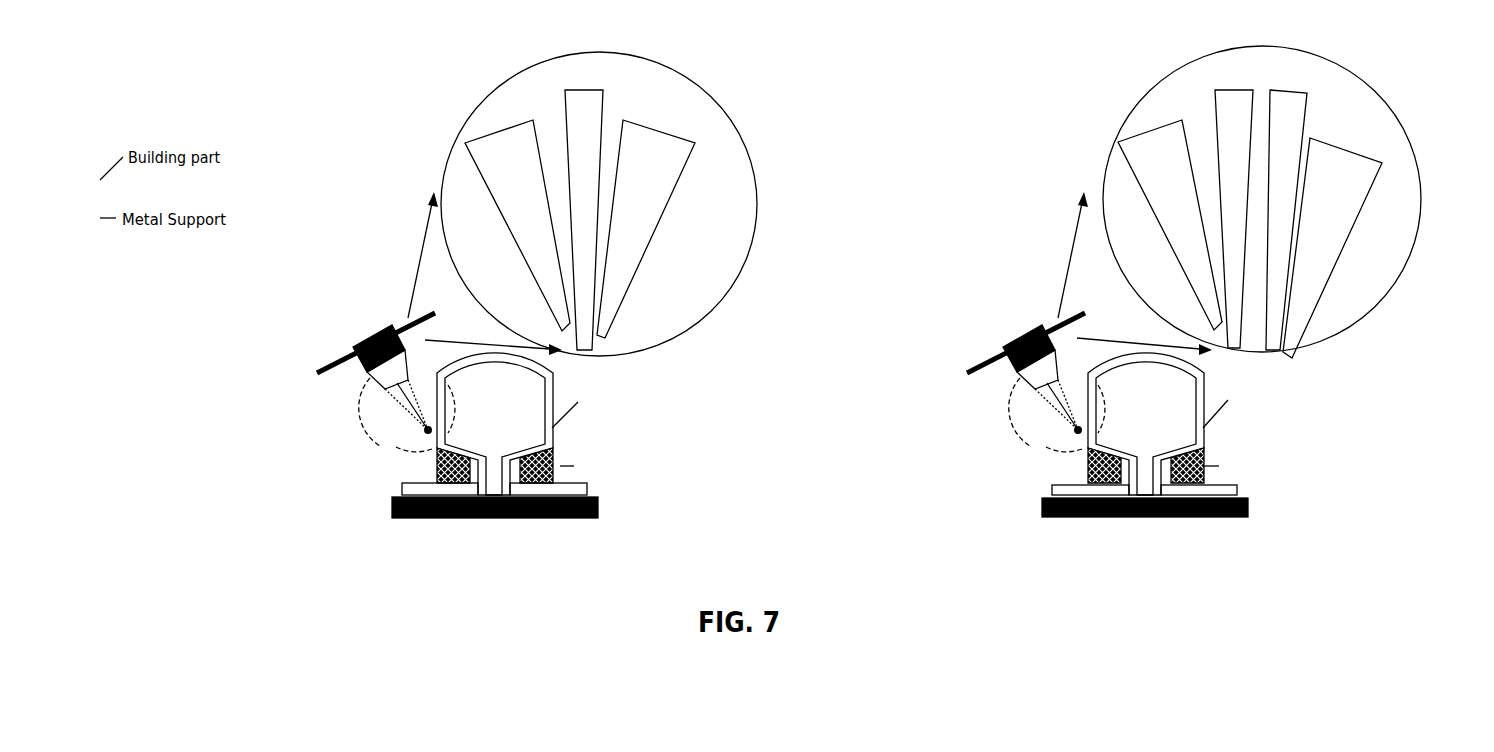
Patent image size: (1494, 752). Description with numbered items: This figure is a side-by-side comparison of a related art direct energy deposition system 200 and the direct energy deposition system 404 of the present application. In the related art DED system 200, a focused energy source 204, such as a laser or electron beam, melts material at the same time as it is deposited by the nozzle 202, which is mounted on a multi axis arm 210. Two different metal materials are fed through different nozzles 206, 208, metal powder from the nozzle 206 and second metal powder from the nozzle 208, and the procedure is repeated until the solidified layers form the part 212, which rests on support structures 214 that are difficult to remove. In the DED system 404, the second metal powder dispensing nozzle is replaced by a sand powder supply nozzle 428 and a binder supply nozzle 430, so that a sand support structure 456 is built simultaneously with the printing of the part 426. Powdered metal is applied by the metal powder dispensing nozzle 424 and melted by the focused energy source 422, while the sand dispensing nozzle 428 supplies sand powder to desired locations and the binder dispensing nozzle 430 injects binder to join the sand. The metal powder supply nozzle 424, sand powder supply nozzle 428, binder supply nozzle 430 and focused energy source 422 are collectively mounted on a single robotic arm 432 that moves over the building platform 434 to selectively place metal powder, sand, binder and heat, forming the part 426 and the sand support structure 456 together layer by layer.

The related art DED system 200 is at (277, 172).
The nozzle 202 is at (368, 343).
The focused energy source 204 is at (583, 95).
The nozzle (metal powder) 206 is at (565, 323).
The second metal powder nozzle 208 is at (612, 292).
The multi axis arm 210 is at (410, 325).
The part 212 is at (553, 387).
The support structures 214 is at (553, 447).
The DED system 404 is at (1250, 427).
The focused energy source 422 is at (1215, 100).
The metal powder dispensing nozzle 424 is at (1130, 150).
The solid object 426 is at (1075, 489).
The sand dispensing nozzle 428 is at (1352, 213).
The binder dispensing nozzle 430 is at (1300, 118).
The robotic arm 432 is at (1033, 320).
The building platform 434 is at (1080, 517).
The sand support structure 456 is at (1205, 472).